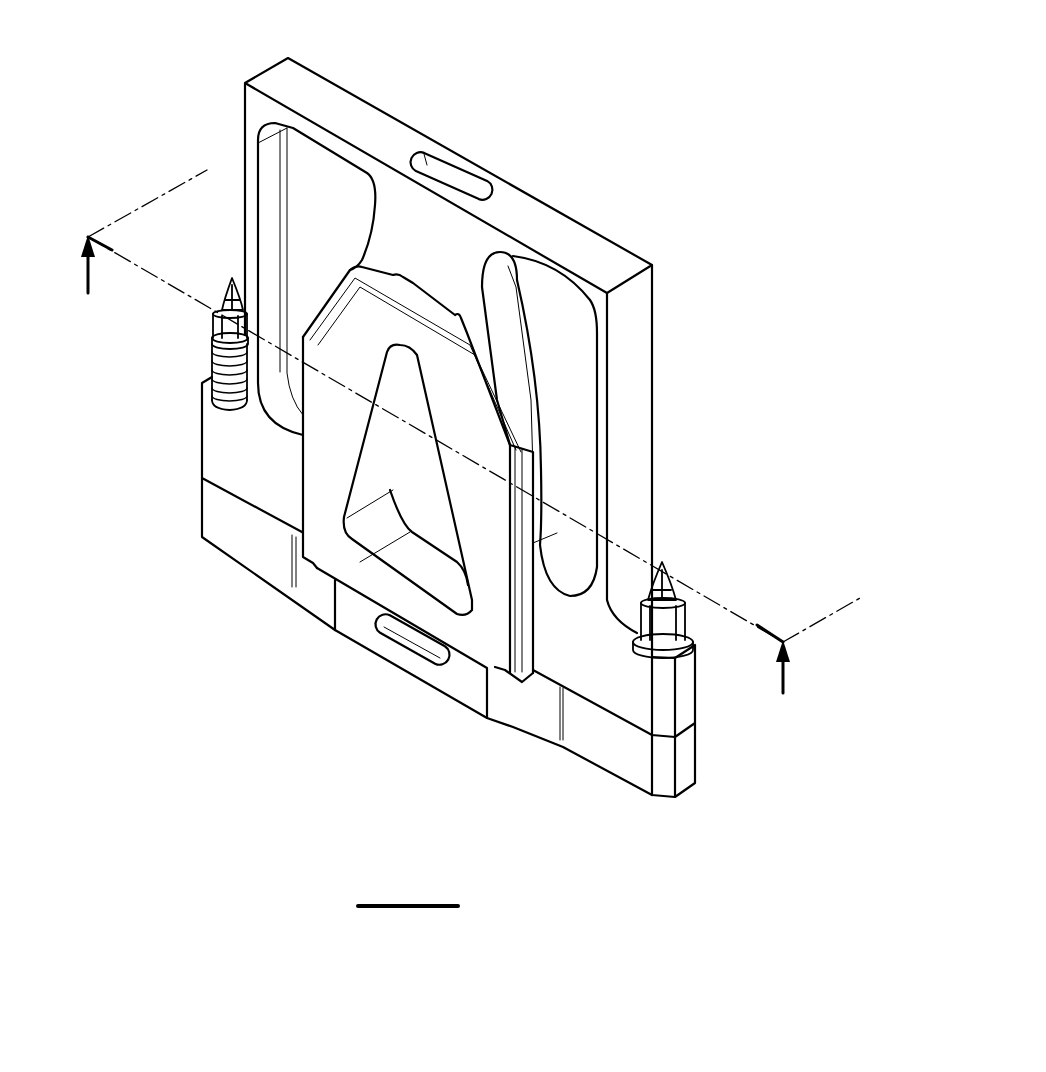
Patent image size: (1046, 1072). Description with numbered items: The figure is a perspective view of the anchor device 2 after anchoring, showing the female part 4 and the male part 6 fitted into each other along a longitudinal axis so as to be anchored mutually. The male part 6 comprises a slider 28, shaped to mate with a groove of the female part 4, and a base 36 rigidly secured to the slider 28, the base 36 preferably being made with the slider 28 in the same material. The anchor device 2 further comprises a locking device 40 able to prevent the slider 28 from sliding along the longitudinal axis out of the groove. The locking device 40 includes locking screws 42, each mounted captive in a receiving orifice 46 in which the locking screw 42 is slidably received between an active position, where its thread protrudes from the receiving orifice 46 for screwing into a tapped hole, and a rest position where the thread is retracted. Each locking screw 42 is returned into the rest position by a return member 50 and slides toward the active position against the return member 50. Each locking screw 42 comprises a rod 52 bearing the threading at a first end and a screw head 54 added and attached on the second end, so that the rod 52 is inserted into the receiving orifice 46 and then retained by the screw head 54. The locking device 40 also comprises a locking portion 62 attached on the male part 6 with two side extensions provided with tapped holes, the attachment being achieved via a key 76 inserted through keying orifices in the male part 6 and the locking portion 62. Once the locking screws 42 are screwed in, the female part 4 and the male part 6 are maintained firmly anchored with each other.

The anchor device 2 is at (123, 112).
The female part 4 is at (600, 90).
The male part 6 is at (257, 641).
The slider 28 is at (432, 285).
The base 36 is at (320, 457).
The locking device 40 is at (120, 375).
The locking screw 42 is at (206, 285).
The receiving orifice 46 is at (215, 385).
The return member 50 is at (212, 368).
The rod 52 is at (233, 283).
The screw head 54 is at (212, 332).
The locking portion 62 is at (222, 565).
The key 76 is at (407, 640).